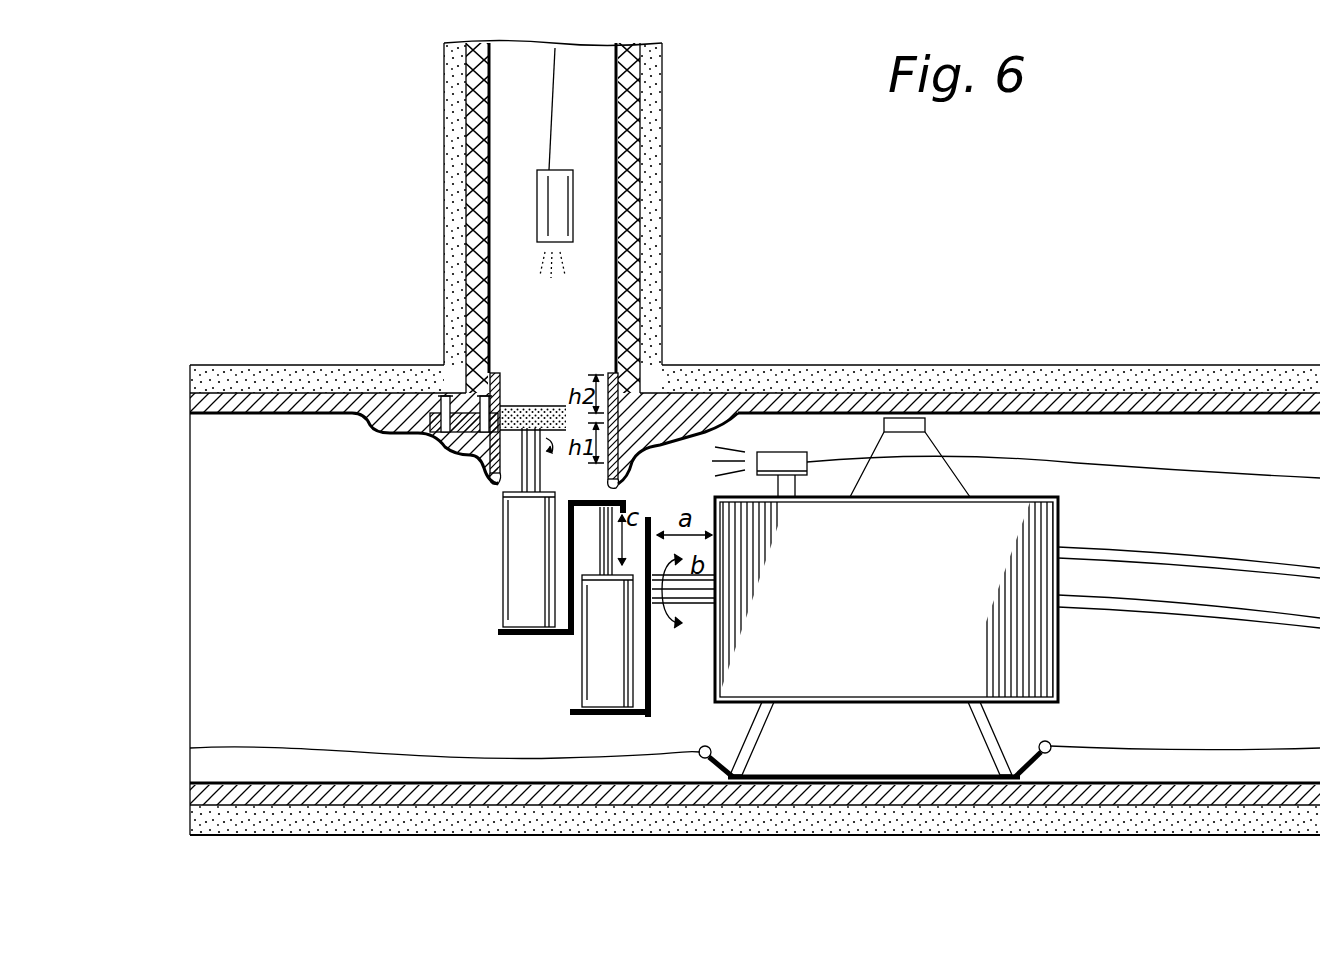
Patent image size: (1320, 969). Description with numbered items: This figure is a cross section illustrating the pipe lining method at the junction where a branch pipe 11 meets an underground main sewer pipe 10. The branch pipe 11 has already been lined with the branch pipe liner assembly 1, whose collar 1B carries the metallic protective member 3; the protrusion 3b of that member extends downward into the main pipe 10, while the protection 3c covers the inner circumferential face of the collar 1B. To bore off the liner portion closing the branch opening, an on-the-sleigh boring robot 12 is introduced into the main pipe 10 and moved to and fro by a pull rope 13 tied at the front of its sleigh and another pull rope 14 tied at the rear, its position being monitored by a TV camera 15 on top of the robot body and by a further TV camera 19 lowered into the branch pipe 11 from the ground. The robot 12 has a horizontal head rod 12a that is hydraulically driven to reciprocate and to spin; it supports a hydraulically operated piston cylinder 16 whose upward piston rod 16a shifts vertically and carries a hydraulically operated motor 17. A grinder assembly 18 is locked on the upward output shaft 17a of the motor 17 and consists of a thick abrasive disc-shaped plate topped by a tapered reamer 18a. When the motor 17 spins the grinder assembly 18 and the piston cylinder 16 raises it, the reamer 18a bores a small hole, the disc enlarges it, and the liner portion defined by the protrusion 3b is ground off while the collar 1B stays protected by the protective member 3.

The branch pipe liner assembly 1 is at (488, 150).
The collar 1B is at (374, 432).
The protective member 3 is at (510, 378).
The protrusion 3b is at (628, 470).
The protection 3c is at (495, 375).
The main sewer pipe 10 is at (966, 362).
The branch pipe 11 is at (657, 212).
The boring robot 12 is at (1060, 537).
The head rod 12a is at (700, 612).
The pull rope 13 is at (332, 757).
The pull rope 14 is at (1158, 748).
The TV camera 15 is at (790, 478).
The piston cylinder 16 is at (588, 680).
The piston rod 16a is at (606, 540).
The hydraulically operated motor 17 is at (505, 598).
The output shaft 17a is at (520, 480).
The grinder assembly 18 is at (560, 405).
The tapered reamer 18a is at (530, 405).
The TV camera 19 is at (566, 186).